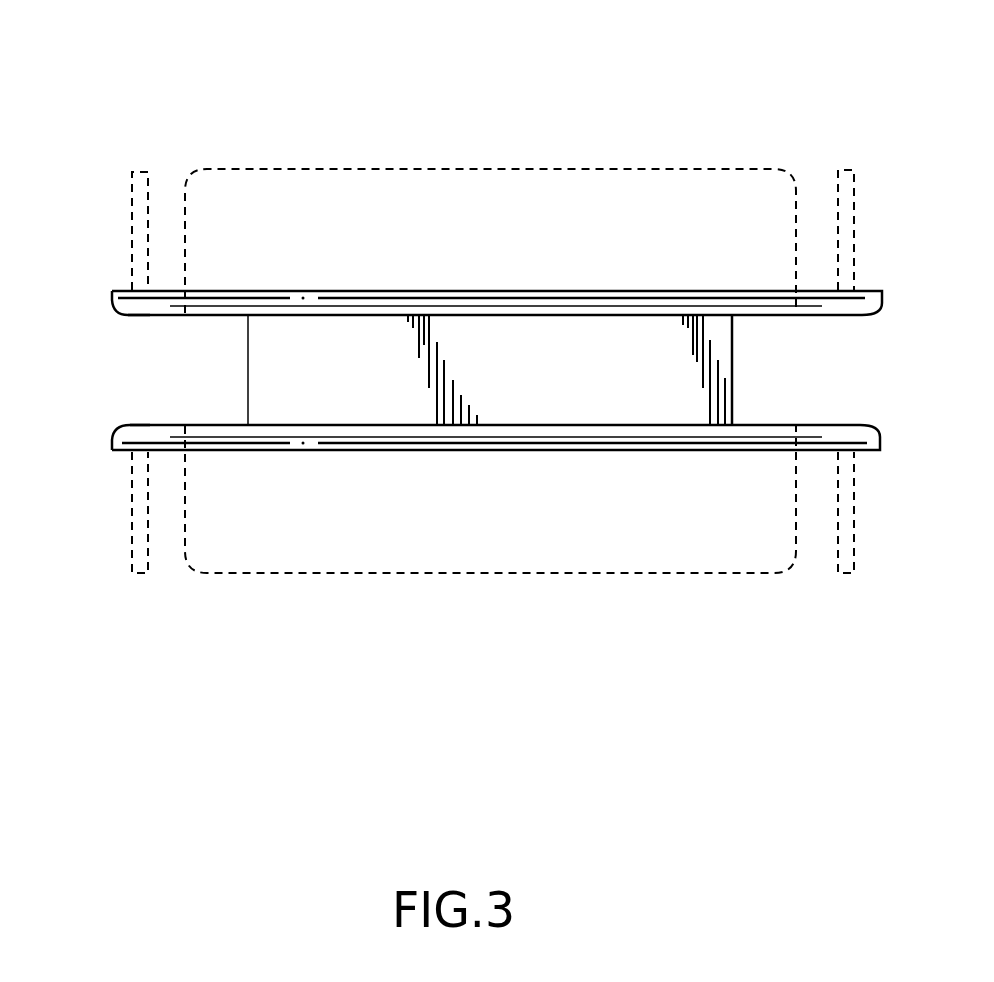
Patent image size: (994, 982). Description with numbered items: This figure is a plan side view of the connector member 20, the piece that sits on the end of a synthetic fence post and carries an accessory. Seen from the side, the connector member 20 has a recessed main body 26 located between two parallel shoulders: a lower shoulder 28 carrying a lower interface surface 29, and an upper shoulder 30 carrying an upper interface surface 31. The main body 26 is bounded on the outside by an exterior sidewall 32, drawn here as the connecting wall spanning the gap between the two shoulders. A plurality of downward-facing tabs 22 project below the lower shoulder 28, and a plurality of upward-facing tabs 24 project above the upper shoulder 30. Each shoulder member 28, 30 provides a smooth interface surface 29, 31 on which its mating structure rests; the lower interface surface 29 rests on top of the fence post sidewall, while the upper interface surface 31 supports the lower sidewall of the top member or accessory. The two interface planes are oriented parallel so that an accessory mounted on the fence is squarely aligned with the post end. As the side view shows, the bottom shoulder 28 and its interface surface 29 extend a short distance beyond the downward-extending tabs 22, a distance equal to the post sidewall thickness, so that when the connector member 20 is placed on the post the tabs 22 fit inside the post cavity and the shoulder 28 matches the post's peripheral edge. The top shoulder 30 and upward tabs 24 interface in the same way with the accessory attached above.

The connector member 20 is at (128, 128).
The downward-facing tabs 22 is at (130, 560).
The upward-facing tabs 24 is at (757, 170).
The recessed main body 26 is at (745, 320).
The lower shoulder 28 is at (118, 432).
The lower interface surface 29 is at (115, 452).
The upper shoulder 30 is at (112, 310).
The upper interface surface 31 is at (118, 290).
The exterior sidewall 32 is at (270, 382).